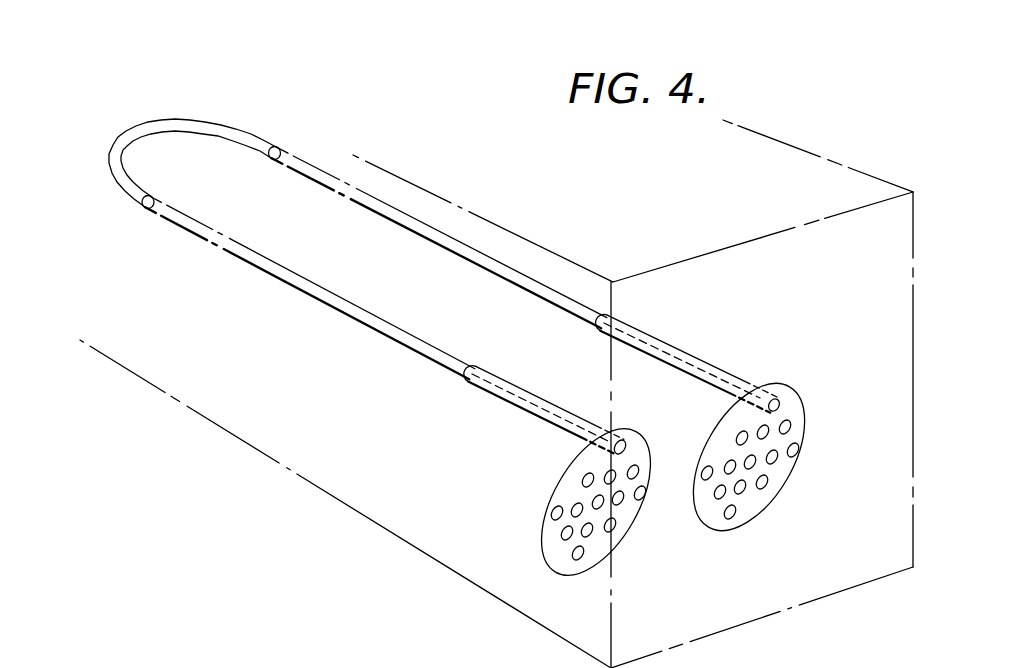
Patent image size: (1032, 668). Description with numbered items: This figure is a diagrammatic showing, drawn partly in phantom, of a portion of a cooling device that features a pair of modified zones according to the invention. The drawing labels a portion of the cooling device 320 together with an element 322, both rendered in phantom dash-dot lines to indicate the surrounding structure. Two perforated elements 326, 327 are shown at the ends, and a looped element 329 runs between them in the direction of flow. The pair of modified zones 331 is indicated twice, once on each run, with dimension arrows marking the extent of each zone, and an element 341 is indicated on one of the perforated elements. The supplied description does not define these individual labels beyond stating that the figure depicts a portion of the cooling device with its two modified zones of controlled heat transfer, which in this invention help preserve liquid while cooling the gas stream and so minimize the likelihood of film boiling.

The heat exchanger housing 320 is at (230, 440).
The housing wall 322 is at (350, 490).
The first perforated disc 326 is at (622, 548).
The second perforated disc 327 is at (770, 512).
The U-shaped tube 329 is at (160, 121).
The sleeve 331 is at (797, 366).
The tube receiving hole 341 is at (622, 444).